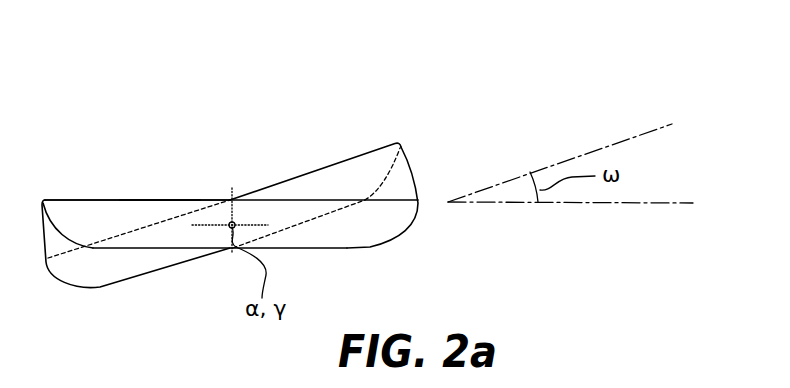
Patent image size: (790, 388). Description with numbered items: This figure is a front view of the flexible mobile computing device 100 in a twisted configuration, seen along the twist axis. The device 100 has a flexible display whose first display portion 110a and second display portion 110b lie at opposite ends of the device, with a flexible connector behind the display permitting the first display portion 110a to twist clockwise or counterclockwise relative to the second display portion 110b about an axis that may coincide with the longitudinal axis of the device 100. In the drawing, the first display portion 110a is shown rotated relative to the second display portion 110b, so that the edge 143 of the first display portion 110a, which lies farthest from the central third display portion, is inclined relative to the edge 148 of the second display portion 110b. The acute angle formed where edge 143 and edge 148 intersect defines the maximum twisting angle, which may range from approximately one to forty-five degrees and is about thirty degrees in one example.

The flexible mobile computing device 100 is at (230, 162).
The first display portion 110a is at (320, 158).
The second display portion 110b is at (92, 198).
The edge of first display portion 143 is at (360, 156).
The edge of second display portion 148 is at (158, 198).